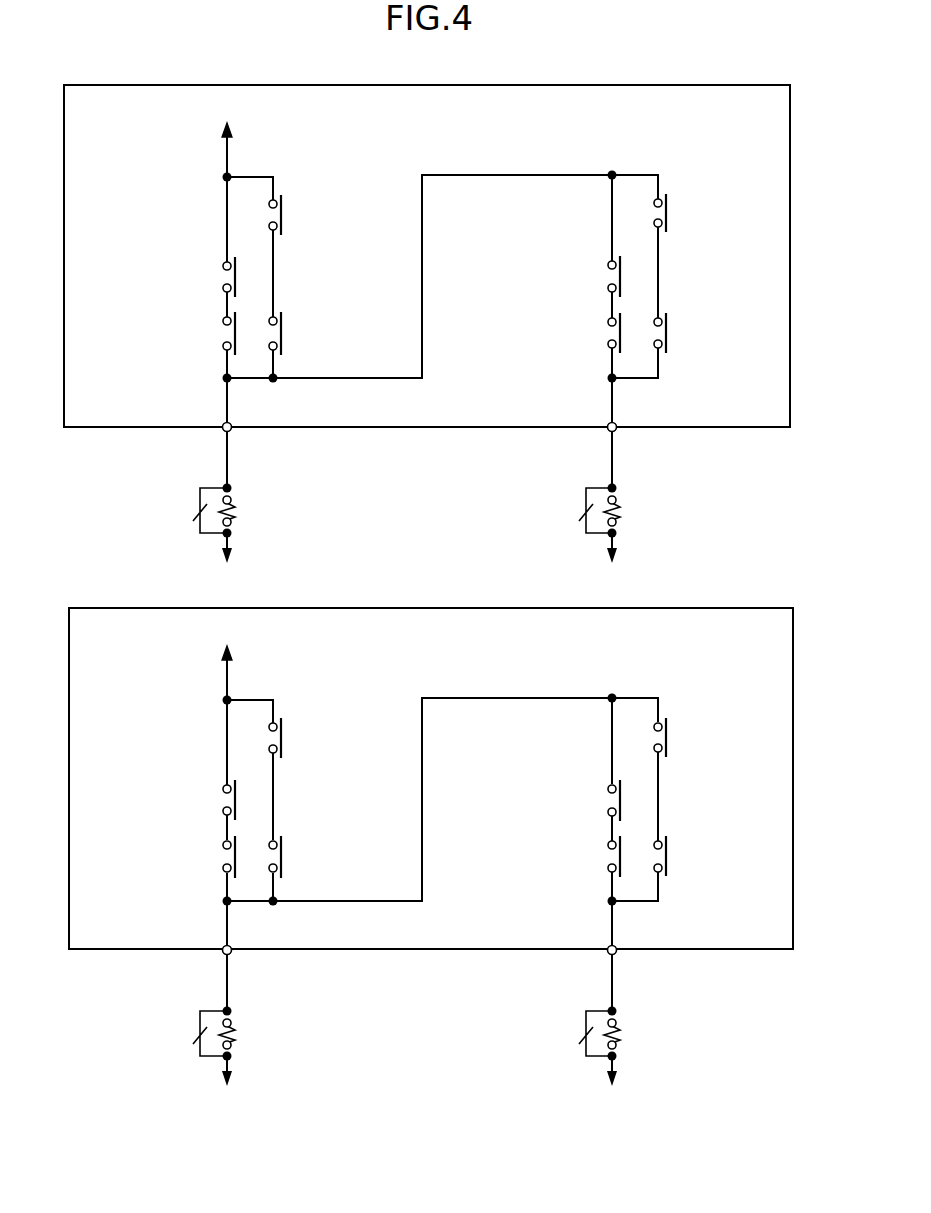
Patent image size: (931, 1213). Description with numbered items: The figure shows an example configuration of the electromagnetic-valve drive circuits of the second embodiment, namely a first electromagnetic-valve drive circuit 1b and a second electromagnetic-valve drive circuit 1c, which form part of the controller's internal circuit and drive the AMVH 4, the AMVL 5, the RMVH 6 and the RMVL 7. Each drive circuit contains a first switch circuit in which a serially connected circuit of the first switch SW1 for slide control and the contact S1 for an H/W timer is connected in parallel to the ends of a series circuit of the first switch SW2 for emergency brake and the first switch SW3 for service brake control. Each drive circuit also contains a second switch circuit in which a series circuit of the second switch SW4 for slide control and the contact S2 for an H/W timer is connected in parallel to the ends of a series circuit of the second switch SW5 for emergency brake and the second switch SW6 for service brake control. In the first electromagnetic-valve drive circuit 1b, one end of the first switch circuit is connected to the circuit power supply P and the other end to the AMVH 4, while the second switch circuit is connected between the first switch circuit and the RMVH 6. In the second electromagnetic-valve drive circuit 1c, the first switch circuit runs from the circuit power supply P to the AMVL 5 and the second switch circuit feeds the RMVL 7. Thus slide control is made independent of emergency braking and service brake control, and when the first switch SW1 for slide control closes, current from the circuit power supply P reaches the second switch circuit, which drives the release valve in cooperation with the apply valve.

The first electromagnetic-valve drive circuit 1b is at (428, 85).
The second electromagnetic-valve drive circuit 1c is at (428, 608).
The AMVH 4 is at (236, 502).
The AMVL 5 is at (236, 1025).
The RMVH 6 is at (621, 502).
The RMVL 7 is at (621, 1024).
The first switch for slide control SW1 is at (223, 272).
The first switch for emergency brake SW2 is at (288, 211).
The first switch for service brake control SW3 is at (283, 333).
The second switch for slide control SW4 is at (608, 273).
The second switch for emergency brake SW5 is at (672, 211).
The second switch for service brake control SW6 is at (667, 329).
The contact for H/W timer S1 is at (223, 338).
The contact for H/W timer S2 is at (608, 337).
The circuit power supply P is at (227, 181).